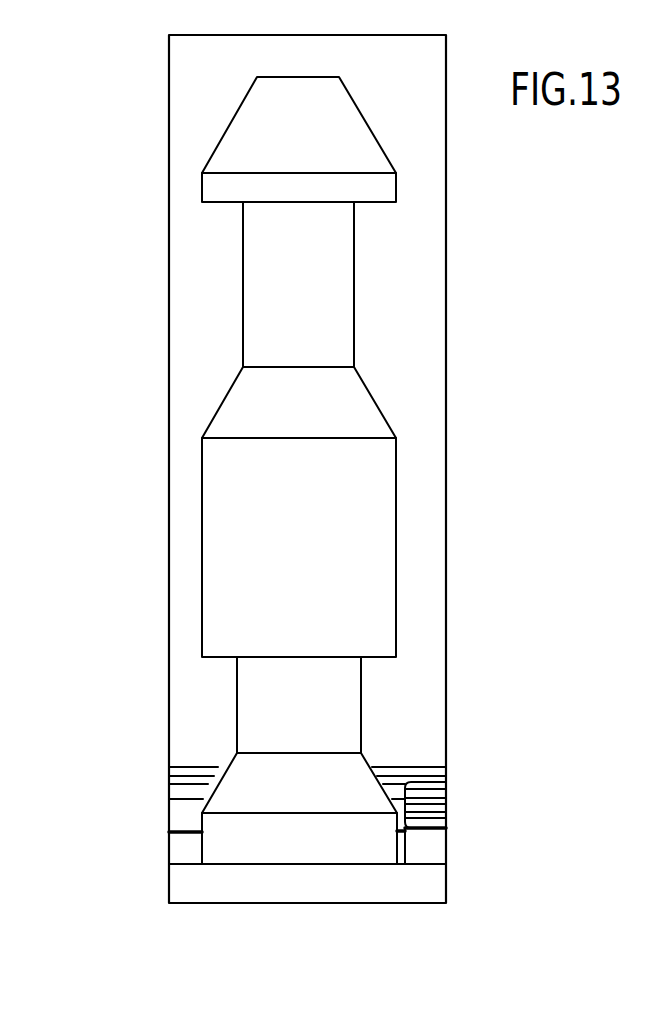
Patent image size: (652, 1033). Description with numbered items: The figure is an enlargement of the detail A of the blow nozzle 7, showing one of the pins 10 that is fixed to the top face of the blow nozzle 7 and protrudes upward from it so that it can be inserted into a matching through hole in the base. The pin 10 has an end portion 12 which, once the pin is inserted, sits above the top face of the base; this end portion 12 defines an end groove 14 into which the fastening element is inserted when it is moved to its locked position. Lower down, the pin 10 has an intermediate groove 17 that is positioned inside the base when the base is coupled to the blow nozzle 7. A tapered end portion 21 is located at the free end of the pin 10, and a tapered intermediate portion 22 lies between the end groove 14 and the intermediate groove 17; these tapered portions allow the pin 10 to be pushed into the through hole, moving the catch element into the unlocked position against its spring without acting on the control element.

The detail A is at (235, 36).
The blow nozzle 7 is at (413, 888).
The pin 10 is at (400, 425).
The end portion 12 is at (420, 228).
The end groove 14 is at (350, 306).
The intermediate groove 17 is at (360, 690).
The tapered end portion 21 is at (258, 154).
The tapered intermediate portion 22 is at (230, 393).